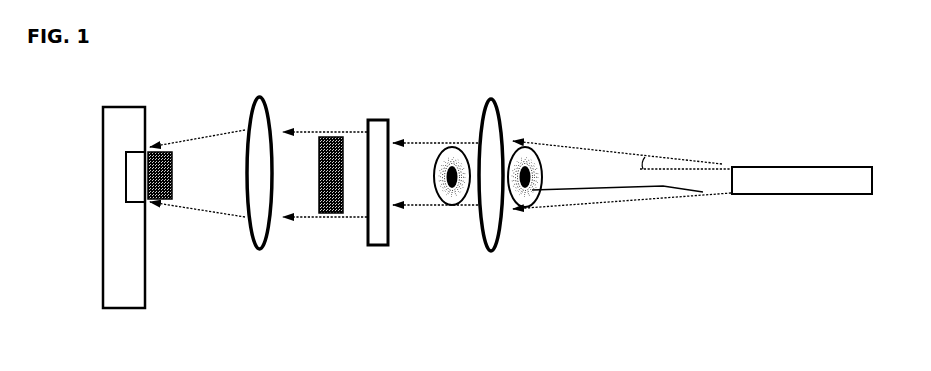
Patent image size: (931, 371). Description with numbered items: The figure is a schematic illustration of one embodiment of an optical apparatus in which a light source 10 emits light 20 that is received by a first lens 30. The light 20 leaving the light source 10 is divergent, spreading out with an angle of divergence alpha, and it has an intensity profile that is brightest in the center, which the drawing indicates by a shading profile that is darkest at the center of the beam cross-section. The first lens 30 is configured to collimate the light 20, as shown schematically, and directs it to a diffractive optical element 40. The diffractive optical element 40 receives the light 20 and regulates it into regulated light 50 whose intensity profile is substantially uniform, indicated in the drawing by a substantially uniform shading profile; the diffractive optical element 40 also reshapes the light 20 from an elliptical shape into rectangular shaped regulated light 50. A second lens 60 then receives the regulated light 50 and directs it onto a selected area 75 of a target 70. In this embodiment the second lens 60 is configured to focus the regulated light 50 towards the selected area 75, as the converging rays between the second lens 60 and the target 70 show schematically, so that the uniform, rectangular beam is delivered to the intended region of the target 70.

The light source 10 is at (802, 203).
The light 20 is at (540, 177).
The first lens 30 is at (490, 193).
The diffractive optical element 40 is at (381, 204).
The regulated light 50 is at (332, 195).
The second lens 60 is at (261, 197).
The target 70 is at (124, 227).
The selected area 75 is at (128, 151).
The angle of divergence alpha is at (648, 165).